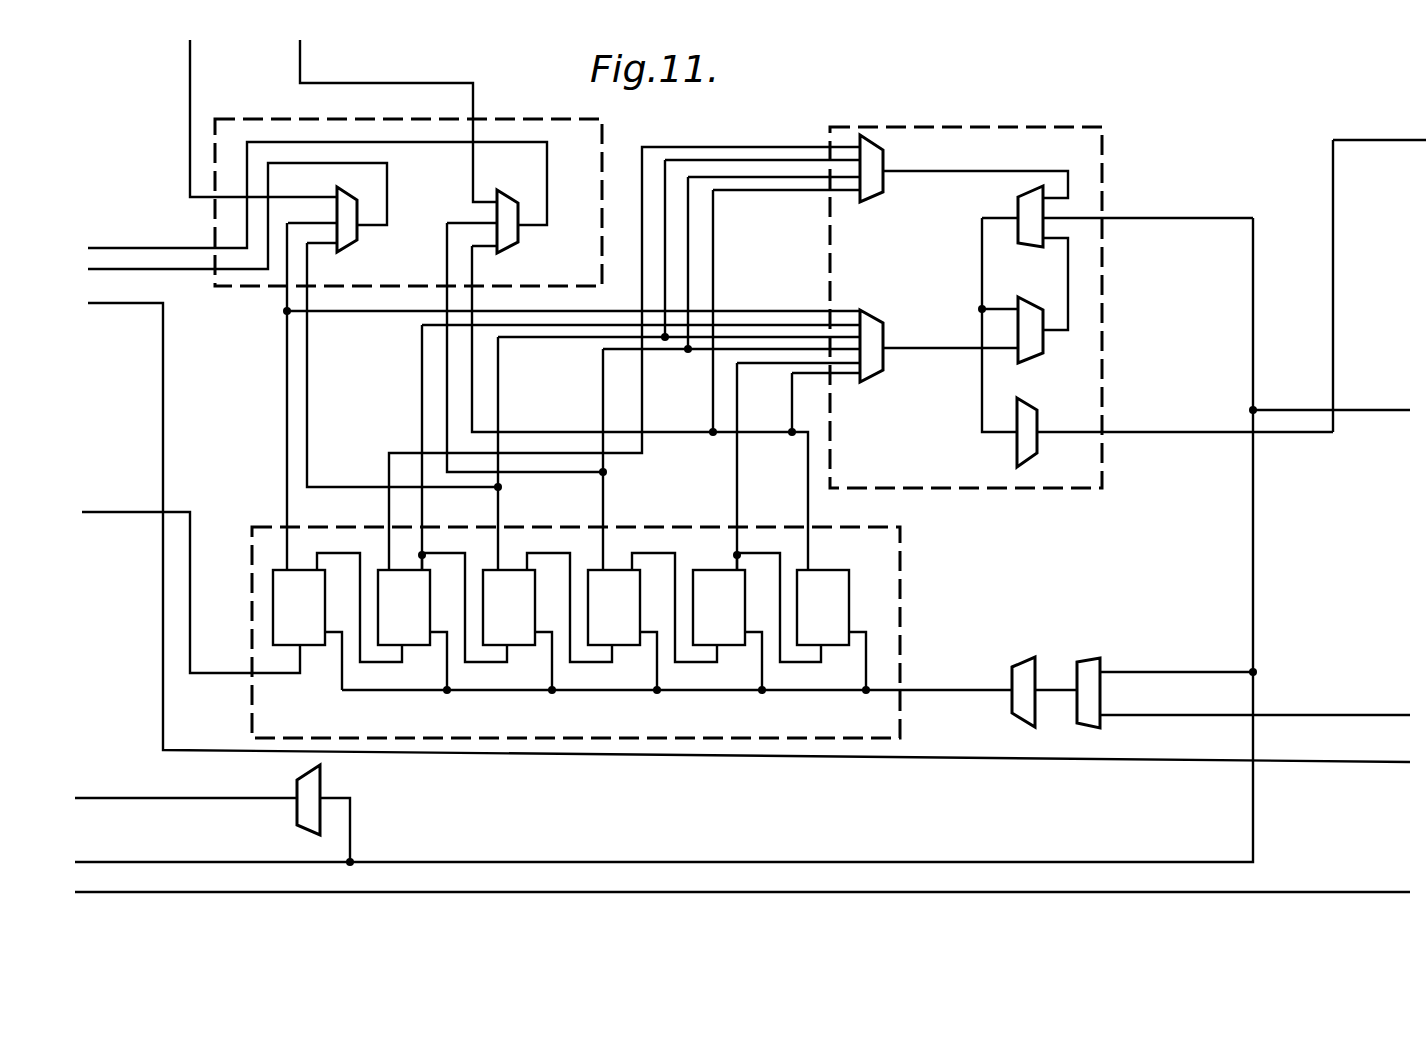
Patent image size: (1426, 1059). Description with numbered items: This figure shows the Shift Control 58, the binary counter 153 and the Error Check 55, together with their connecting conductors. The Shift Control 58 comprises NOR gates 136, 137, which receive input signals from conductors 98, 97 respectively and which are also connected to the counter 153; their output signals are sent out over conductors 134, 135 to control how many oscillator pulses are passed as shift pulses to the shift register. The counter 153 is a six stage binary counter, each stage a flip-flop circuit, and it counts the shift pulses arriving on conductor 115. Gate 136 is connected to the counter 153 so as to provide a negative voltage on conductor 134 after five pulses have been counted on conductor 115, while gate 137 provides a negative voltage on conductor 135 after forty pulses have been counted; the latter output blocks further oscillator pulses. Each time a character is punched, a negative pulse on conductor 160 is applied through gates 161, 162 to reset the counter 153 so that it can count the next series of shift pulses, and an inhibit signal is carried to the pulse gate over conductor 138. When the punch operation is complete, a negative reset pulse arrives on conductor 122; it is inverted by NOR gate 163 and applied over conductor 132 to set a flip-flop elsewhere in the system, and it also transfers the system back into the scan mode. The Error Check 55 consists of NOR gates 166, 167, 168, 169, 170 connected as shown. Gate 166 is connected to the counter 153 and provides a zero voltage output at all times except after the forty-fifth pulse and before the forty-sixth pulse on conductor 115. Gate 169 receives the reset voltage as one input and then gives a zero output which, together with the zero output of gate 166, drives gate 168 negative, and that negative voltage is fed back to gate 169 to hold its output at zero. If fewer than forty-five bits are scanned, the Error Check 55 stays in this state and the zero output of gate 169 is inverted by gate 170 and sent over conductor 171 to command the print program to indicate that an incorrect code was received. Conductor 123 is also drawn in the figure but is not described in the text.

The Error Check 55 is at (1102, 150).
The Shift Control 58 is at (232, 286).
The conductor 97 is at (382, 84).
The conductor 98 is at (190, 68).
The conductor 115 is at (151, 510).
The conductor 122 is at (1372, 402).
The control line 123 is at (103, 893).
The conductor 132 is at (130, 798).
The conductor 134 is at (128, 270).
The conductor 135 is at (114, 248).
The NOR gate 136 is at (346, 243).
The NOR gate 137 is at (508, 238).
The conductor 138 is at (150, 303).
The binary counter 153 is at (252, 527).
The conductor 160 is at (1320, 716).
The gate 161 is at (1094, 720).
The gate 162 is at (1024, 717).
The NOR gate 163 is at (320, 770).
The NOR gate 166 is at (892, 298).
The NOR gate 167 is at (876, 190).
The NOR gate 168 is at (1036, 287).
The NOR gate 169 is at (1018, 208).
The NOR gate 170 is at (1028, 450).
The conductor 171 is at (1062, 430).